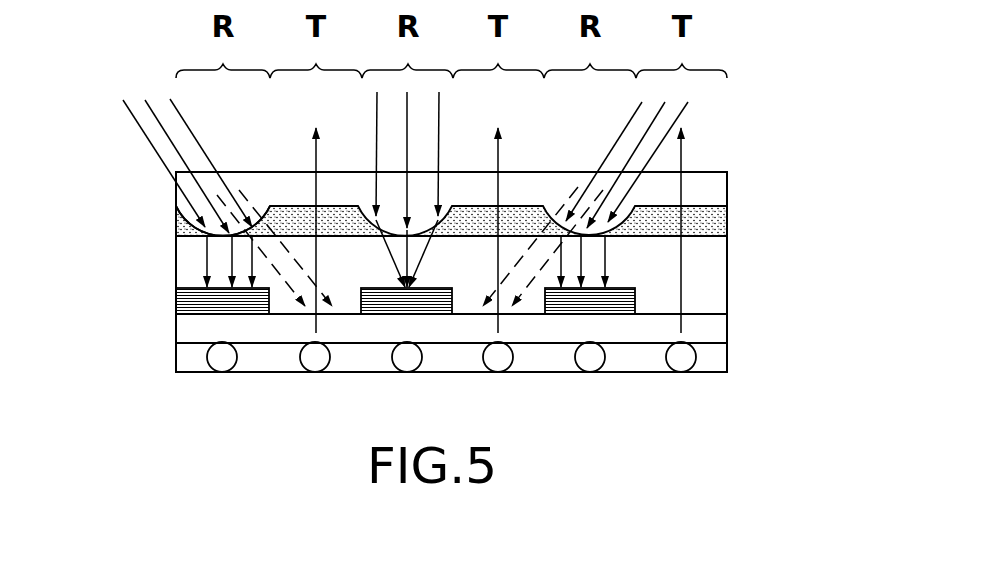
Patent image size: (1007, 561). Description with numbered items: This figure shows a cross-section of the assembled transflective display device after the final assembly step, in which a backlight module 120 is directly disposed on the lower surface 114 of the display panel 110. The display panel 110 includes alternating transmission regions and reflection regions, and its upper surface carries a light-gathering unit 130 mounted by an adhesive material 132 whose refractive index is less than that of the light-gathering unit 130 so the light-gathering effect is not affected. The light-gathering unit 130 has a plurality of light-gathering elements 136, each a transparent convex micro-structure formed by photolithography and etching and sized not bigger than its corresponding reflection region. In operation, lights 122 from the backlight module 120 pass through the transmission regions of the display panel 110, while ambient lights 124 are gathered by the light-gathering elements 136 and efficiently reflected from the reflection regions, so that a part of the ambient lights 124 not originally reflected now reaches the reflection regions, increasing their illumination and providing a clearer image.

The display panel 110 is at (730, 238).
The lower surface 114 is at (703, 315).
The backlight module 120 is at (730, 316).
The lights 122 is at (313, 152).
The ambient lights 124 is at (147, 128).
The light-gathering unit 130 is at (710, 192).
The adhesive material 132 is at (727, 225).
The light-gathering element 136 is at (217, 217).